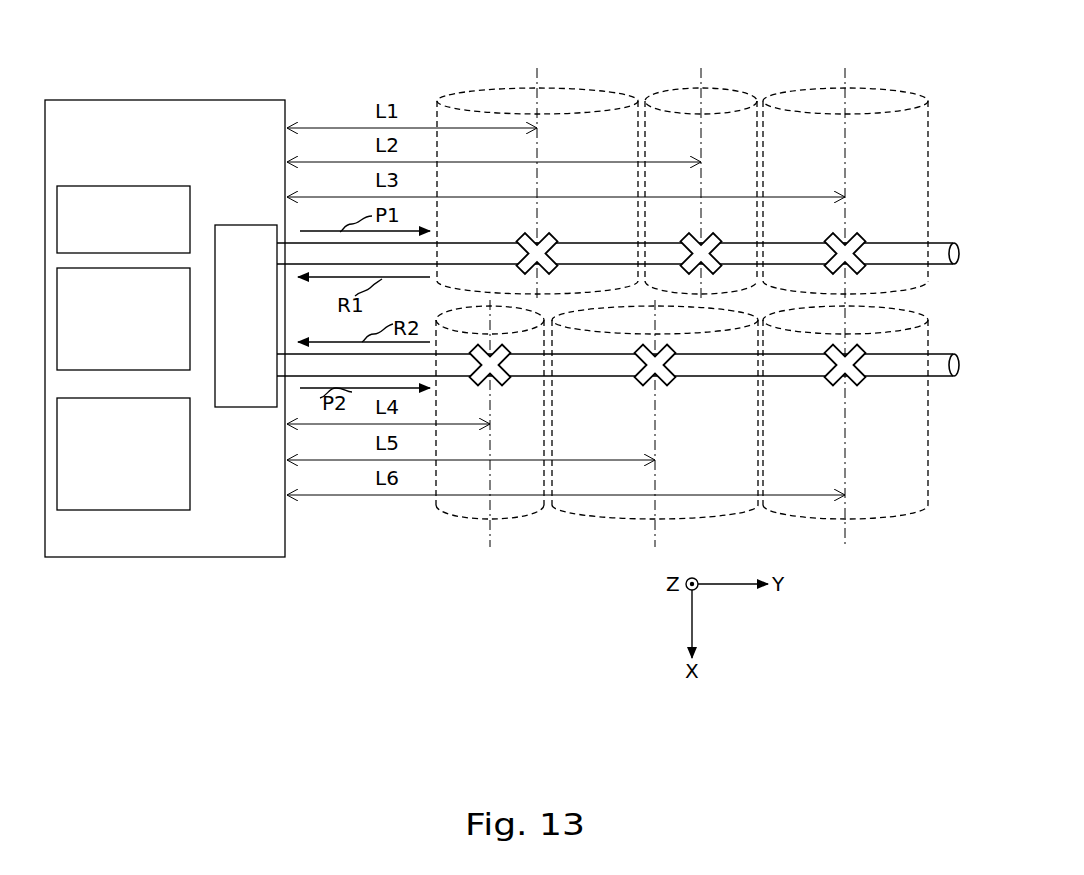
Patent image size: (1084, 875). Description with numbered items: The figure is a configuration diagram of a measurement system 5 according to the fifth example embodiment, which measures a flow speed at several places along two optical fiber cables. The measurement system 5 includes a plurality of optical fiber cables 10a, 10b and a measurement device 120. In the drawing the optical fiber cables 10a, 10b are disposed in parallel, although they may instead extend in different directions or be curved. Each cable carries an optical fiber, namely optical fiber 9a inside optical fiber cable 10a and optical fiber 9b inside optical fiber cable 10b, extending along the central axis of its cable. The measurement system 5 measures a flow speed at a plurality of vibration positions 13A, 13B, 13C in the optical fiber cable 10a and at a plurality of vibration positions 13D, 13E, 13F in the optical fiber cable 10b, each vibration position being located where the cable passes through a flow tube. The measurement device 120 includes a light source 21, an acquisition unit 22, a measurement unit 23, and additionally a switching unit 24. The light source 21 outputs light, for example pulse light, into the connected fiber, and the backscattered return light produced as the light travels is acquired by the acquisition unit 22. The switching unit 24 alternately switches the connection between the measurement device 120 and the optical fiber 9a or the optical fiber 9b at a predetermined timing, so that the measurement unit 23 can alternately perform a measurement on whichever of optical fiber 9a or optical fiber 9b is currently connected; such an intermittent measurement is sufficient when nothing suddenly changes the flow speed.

The measurement system 5 is at (470, 25).
The measurement device 120 is at (275, 100).
The light source 21 is at (178, 216).
The acquisition unit 22 is at (178, 301).
The measurement unit 23 is at (178, 440).
The switching unit 24 is at (265, 260).
The optical fiber cable 10a is at (506, 246).
The optical fiber 9a is at (618, 234).
The optical fiber cable 10b is at (722, 396).
The optical fiber 9b is at (618, 389).
The vibration position 13A is at (553, 240).
The vibration position 13B is at (698, 232).
The vibration position 13C is at (856, 238).
The vibration position 13D is at (490, 384).
The vibration position 13E is at (640, 381).
The vibration position 13F is at (828, 379).